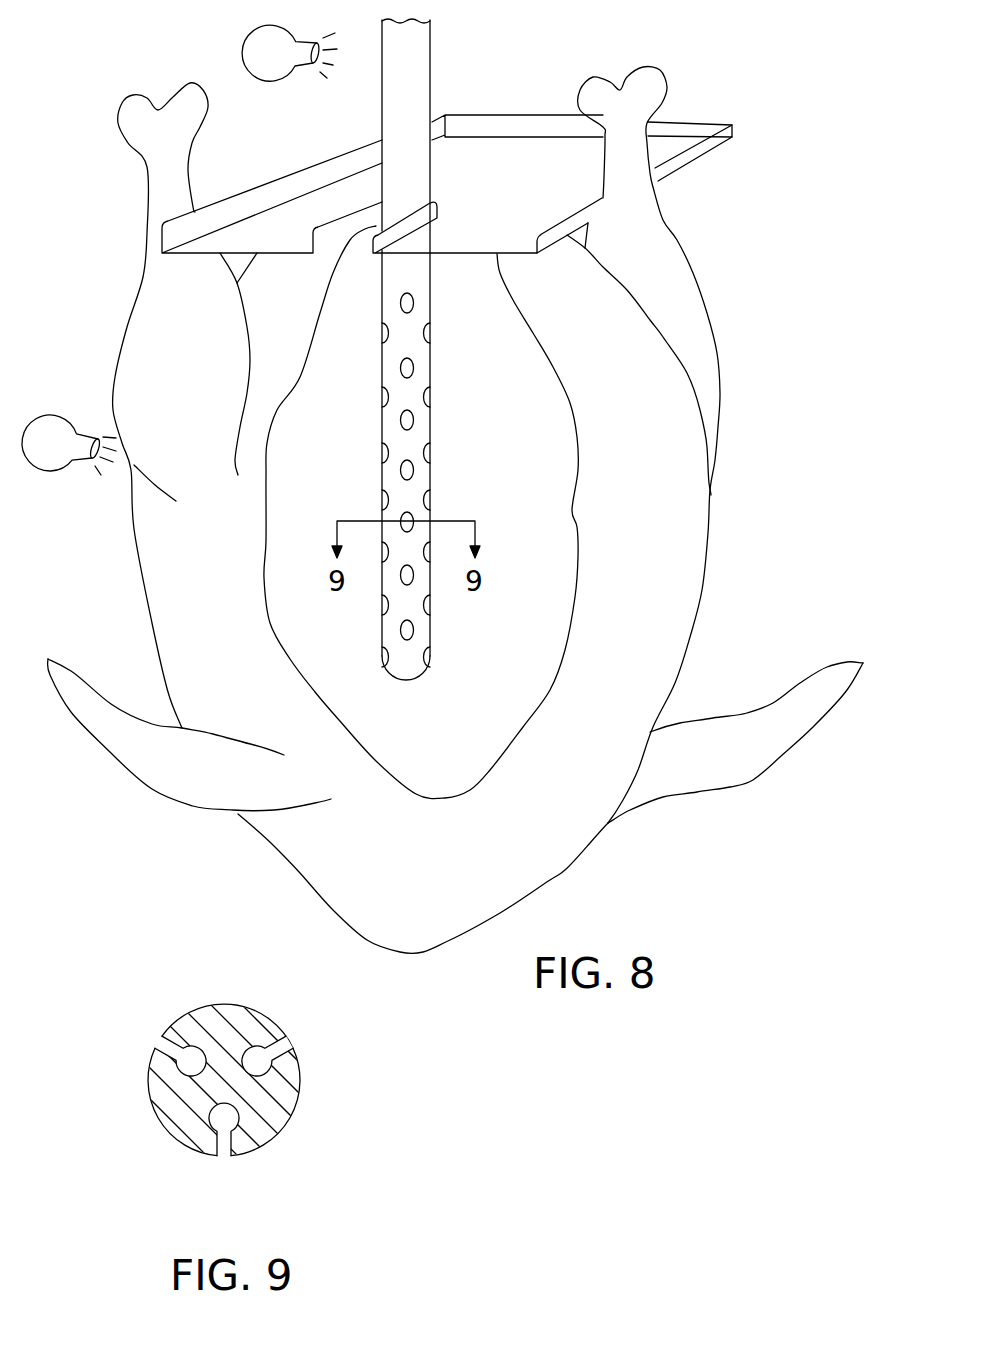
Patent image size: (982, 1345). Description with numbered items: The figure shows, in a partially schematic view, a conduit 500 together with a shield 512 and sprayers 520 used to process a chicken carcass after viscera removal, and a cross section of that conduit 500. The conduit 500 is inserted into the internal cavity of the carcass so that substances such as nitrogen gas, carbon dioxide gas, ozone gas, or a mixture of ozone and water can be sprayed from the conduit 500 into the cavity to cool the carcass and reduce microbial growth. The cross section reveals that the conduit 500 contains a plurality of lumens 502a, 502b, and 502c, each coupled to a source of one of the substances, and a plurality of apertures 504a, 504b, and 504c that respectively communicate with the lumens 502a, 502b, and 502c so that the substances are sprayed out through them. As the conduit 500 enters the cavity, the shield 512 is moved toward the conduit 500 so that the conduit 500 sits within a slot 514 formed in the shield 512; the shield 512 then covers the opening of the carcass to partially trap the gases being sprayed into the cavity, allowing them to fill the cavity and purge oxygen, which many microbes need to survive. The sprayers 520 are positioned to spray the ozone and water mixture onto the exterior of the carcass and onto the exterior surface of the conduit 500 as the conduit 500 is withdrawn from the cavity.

In FIG. 8, the conduit 500 is at (417, 70).
In FIG. 9, the conduit 500 is at (228, 1018).
In FIG. 9, the lumen 502a is at (297, 1107).
In FIG. 9, the lumen 502b is at (258, 1148).
In FIG. 9, the lumen 502c is at (196, 1048).
In FIG. 8, the aperture 504a is at (430, 333).
In FIG. 9, the aperture 504a is at (283, 1040).
In FIG. 8, the aperture 504b is at (410, 582).
In FIG. 9, the aperture 504b is at (223, 1150).
In FIG. 8, the aperture 504c is at (384, 658).
In FIG. 9, the aperture 504c is at (168, 1040).
In FIG. 8, the shield 512 is at (507, 142).
In FIG. 8, the slot 514 is at (337, 222).
In FIG. 8, the sprayer 520 is at (258, 57).